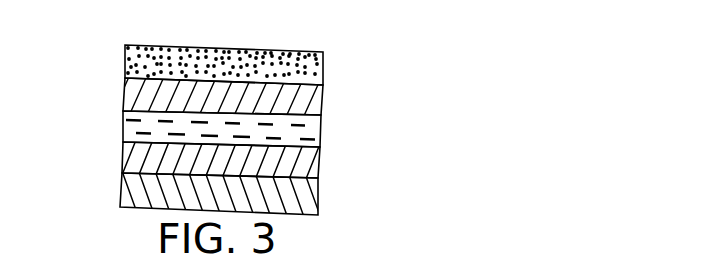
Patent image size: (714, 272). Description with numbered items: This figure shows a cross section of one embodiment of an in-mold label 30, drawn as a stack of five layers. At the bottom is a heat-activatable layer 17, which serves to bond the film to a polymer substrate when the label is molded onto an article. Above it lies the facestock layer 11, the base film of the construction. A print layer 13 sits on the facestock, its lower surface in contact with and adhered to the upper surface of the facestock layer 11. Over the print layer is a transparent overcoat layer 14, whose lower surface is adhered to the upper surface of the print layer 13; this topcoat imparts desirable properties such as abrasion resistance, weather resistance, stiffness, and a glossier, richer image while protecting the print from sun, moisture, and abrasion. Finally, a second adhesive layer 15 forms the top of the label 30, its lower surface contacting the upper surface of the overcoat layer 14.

The label 30 is at (95, 57).
The second adhesive layer 15 is at (325, 70).
The transparent overcoat layer 14 is at (325, 102).
The print layer 13 is at (323, 137).
The facestock layer 11 is at (318, 170).
The heat-activatable layer 17 is at (318, 192).